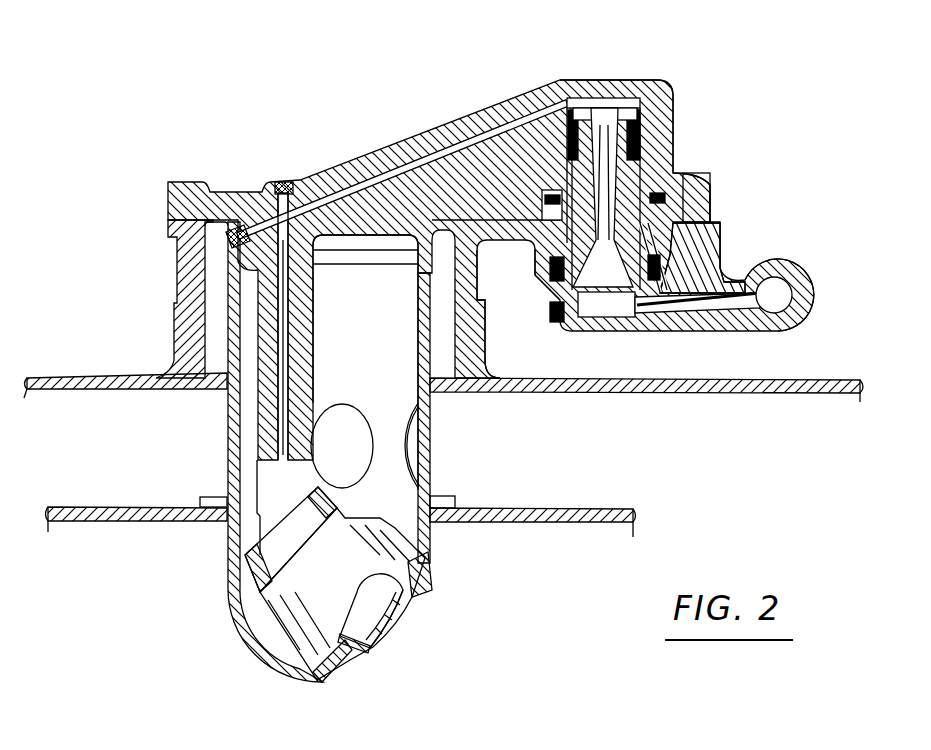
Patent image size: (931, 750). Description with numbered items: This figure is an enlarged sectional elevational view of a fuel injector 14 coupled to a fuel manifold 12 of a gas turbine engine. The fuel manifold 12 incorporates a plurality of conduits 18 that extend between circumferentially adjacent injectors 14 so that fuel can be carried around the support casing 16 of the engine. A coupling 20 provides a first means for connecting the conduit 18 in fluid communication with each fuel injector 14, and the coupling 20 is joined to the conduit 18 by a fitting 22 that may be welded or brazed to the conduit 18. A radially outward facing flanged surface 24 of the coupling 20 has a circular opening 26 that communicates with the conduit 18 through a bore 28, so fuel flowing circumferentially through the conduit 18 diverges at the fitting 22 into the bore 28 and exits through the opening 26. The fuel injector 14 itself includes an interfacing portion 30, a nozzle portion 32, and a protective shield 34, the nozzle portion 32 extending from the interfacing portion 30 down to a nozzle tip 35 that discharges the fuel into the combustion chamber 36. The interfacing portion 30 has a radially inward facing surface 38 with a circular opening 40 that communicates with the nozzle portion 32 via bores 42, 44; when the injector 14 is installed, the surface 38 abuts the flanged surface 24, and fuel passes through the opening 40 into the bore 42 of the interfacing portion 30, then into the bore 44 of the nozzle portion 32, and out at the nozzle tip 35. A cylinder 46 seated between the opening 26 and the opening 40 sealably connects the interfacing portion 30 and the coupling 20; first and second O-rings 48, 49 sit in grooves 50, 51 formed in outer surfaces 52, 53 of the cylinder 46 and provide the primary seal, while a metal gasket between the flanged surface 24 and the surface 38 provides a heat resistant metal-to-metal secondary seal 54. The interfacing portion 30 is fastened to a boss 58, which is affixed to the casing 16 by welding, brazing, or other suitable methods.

The fuel manifold 12 is at (797, 226).
The fuel injector 14 is at (313, 150).
The support casing 16 is at (793, 378).
The conduit 18 is at (788, 288).
The coupling 20 is at (533, 264).
The fitting 22 is at (812, 312).
The flanged surface 24 is at (487, 212).
The circular opening 26 is at (593, 308).
The bore 28 is at (727, 333).
The interfacing portion 30 is at (527, 147).
The nozzle portion 32 is at (314, 303).
The protective shield 34 is at (226, 451).
The nozzle tip 35 is at (392, 607).
The combustion chamber 36 is at (541, 563).
The radially inward facing surface 38 is at (720, 228).
The circular opening 40 is at (603, 100).
The bore 42 is at (395, 172).
The bore 44 is at (288, 353).
The cylinder 46 is at (673, 140).
The first O-ring 48 is at (673, 107).
The second O-ring 49 is at (540, 293).
The groove 50 is at (557, 310).
The groove 51 is at (583, 105).
The outer surface 52 is at (665, 173).
The outer surface 53 is at (680, 250).
The secondary seal 54 is at (695, 212).
The boss 58 is at (172, 330).